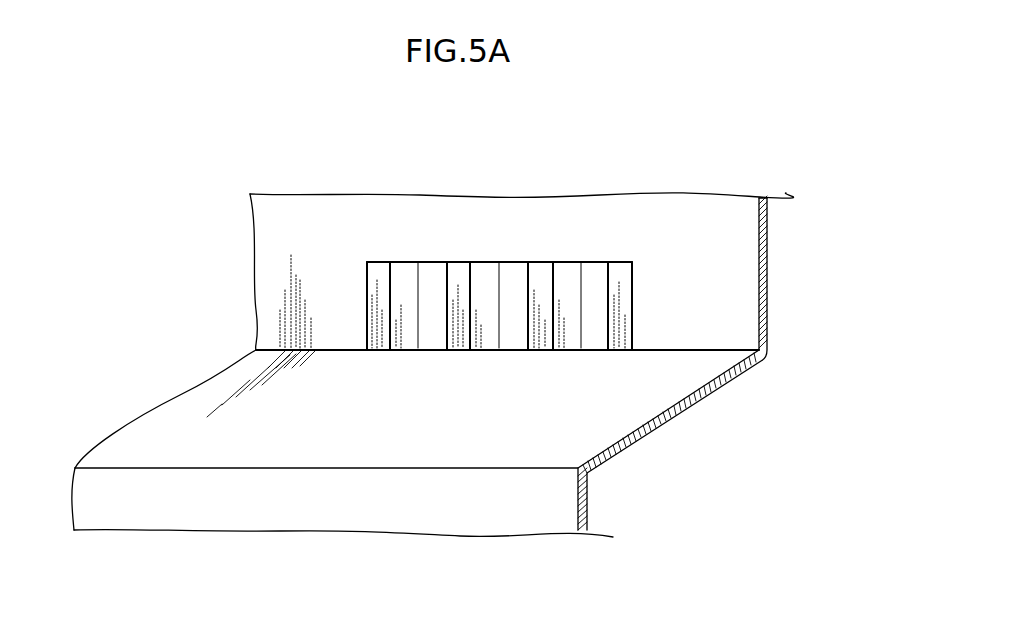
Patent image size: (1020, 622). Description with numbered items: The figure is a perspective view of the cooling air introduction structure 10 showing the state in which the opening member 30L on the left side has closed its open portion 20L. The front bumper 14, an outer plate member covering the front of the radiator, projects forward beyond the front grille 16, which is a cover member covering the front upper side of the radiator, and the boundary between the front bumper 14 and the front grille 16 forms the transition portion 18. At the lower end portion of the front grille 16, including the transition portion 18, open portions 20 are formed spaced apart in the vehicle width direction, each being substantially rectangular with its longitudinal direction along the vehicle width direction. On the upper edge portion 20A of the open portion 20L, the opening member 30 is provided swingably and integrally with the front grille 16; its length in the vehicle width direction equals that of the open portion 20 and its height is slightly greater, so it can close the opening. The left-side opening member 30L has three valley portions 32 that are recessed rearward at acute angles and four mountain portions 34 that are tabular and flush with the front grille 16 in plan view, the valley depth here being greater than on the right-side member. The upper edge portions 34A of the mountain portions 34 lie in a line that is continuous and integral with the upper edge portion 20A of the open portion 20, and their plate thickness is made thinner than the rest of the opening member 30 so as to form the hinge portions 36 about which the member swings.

The cooling air introduction structure 10 is at (228, 228).
The front bumper 14 is at (455, 522).
The front grille 16 is at (470, 207).
The transition portion 18 is at (698, 345).
The open portion 20 is at (344, 350).
The open portion on the left side 20L is at (366, 308).
The upper edge portion of the open portion 20A is at (630, 261).
The opening member 30 is at (503, 352).
The opening member on the left side 30L is at (538, 325).
The valley portion 32 is at (418, 280).
The mountain portion 34 is at (378, 350).
The upper edge portion of the mountain portion 34A is at (453, 262).
The hinge portion 36 is at (379, 261).